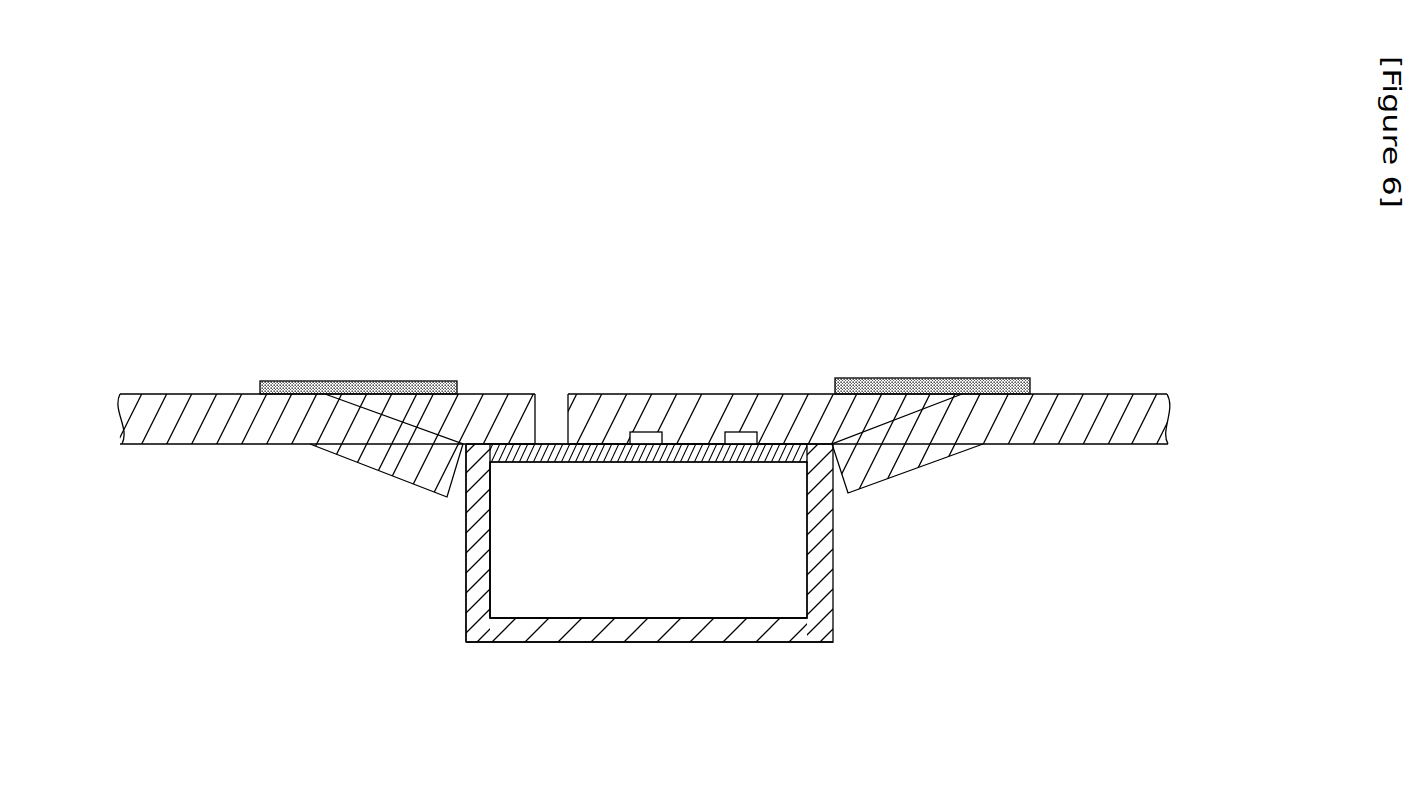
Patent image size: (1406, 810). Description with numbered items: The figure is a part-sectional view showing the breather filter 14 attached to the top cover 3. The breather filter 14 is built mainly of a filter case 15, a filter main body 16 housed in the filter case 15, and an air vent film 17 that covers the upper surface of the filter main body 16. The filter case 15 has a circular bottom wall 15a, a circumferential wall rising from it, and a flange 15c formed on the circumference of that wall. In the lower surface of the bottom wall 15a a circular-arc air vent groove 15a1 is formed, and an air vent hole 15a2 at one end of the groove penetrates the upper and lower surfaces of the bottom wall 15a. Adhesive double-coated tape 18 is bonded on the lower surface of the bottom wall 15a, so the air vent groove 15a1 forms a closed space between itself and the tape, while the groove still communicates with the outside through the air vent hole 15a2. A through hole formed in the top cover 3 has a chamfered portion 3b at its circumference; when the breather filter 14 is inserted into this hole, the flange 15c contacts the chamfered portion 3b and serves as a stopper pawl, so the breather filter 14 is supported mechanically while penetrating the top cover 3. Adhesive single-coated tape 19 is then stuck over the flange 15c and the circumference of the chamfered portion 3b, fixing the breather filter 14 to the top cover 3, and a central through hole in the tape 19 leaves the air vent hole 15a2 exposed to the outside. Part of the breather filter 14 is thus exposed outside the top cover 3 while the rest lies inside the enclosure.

The top cover 3 is at (1100, 394).
The chamfered portion 3b is at (357, 449).
The breather filter 14 is at (862, 565).
The filter case 15 is at (466, 520).
The bottom wall 15a is at (490, 423).
The air vent groove 15a1 is at (603, 442).
The air vent hole 15a2 is at (562, 394).
The flange 15c is at (875, 409).
The filter main body 16 is at (543, 558).
The air vent film 17 is at (618, 632).
The adhesive double-coated tape 18 is at (633, 432).
The adhesive single-coated tape 19 is at (915, 377).